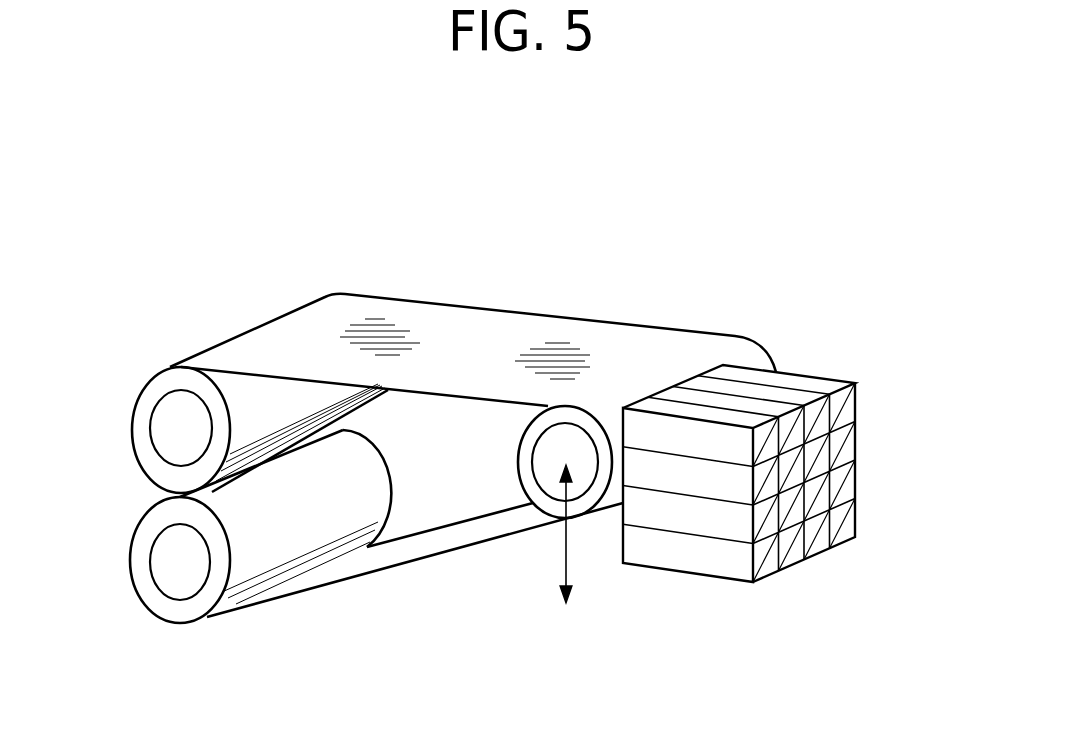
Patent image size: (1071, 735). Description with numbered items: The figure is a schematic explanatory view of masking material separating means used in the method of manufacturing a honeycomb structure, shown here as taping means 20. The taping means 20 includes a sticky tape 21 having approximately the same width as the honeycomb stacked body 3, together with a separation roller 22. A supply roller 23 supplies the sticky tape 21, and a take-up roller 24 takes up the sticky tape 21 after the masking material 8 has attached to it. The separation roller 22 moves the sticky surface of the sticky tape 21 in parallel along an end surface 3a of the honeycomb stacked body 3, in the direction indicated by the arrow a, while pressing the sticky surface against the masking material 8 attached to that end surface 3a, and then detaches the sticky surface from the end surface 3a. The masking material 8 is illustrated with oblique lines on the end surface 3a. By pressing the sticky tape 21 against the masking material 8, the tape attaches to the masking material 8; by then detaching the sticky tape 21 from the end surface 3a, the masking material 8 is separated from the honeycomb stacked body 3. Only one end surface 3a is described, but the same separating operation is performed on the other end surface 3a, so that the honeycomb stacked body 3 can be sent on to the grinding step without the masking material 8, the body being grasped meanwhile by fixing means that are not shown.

The taping means 20 is at (747, 307).
The sticky tape 21 is at (458, 318).
The separation roller 22 is at (530, 485).
The supply roller 23 is at (140, 424).
The take-up roller 24 is at (140, 574).
The honeycomb stacked body 3 is at (765, 443).
The end surface 3a is at (670, 390).
The masking material 8 is at (622, 543).
The arrow a is at (562, 550).